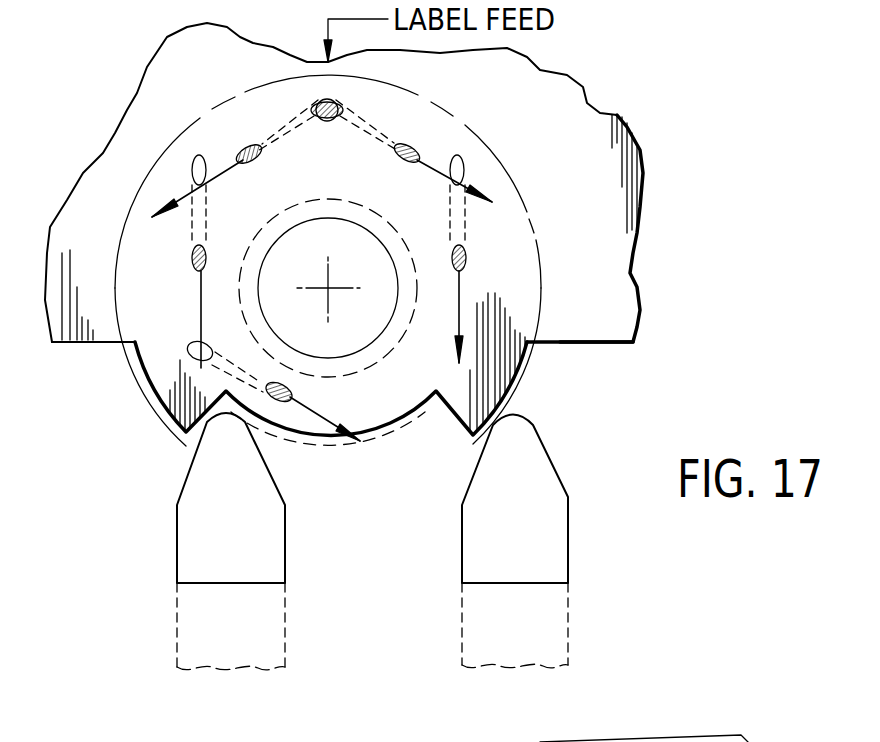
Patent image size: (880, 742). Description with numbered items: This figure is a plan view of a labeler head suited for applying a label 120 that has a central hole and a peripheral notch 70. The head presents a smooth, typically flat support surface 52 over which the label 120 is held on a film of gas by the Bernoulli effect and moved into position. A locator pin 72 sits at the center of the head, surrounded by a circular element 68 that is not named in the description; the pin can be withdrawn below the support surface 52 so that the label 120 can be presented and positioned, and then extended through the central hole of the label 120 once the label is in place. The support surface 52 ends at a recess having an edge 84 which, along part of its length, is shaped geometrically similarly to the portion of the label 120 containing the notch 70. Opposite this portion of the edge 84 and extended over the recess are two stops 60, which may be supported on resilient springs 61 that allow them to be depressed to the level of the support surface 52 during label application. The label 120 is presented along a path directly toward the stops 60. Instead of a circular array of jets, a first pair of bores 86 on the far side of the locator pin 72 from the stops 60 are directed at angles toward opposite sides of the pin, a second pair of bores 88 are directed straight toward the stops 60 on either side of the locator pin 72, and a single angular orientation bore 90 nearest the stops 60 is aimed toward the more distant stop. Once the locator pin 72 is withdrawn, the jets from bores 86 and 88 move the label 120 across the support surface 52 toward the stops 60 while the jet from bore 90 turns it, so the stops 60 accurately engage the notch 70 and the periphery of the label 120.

The support surface 52 is at (613, 264).
The stops 60 is at (197, 522).
The resilient springs 61 is at (460, 623).
The hub 68 is at (406, 333).
The peripheral notch 70 is at (384, 436).
The locator pin 72 is at (350, 338).
The edge 84 is at (600, 342).
The first pair of bores 86 is at (243, 150).
The second pair of bores 88 is at (192, 258).
The angular orientation bore 90 is at (283, 402).
The label 120 is at (526, 201).